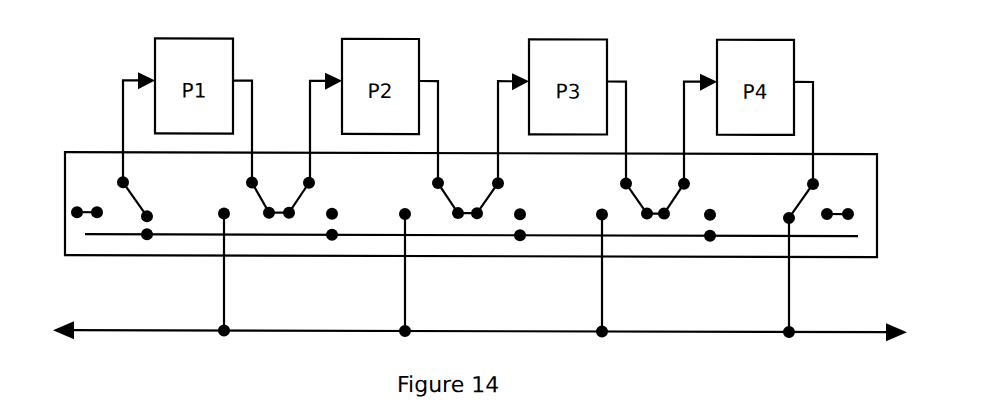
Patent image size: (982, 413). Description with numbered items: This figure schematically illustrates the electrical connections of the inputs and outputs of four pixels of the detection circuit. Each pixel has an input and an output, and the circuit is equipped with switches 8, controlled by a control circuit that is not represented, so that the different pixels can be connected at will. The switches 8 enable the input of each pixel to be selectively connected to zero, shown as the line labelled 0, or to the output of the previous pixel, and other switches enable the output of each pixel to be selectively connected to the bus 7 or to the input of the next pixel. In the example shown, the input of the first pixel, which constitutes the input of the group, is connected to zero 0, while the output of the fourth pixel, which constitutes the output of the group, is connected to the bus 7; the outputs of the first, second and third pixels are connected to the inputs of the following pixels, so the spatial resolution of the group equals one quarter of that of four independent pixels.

The switches 8 is at (80, 165).
The bus 7 is at (773, 331).
The zero line 0 is at (464, 236).